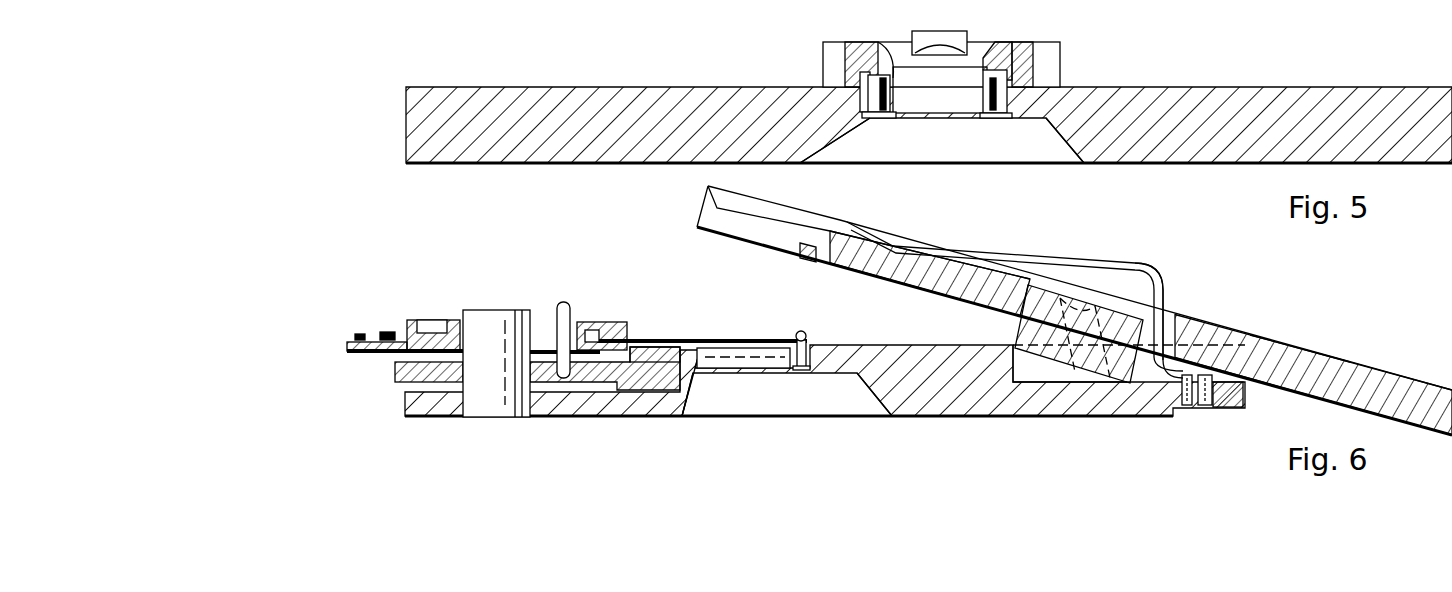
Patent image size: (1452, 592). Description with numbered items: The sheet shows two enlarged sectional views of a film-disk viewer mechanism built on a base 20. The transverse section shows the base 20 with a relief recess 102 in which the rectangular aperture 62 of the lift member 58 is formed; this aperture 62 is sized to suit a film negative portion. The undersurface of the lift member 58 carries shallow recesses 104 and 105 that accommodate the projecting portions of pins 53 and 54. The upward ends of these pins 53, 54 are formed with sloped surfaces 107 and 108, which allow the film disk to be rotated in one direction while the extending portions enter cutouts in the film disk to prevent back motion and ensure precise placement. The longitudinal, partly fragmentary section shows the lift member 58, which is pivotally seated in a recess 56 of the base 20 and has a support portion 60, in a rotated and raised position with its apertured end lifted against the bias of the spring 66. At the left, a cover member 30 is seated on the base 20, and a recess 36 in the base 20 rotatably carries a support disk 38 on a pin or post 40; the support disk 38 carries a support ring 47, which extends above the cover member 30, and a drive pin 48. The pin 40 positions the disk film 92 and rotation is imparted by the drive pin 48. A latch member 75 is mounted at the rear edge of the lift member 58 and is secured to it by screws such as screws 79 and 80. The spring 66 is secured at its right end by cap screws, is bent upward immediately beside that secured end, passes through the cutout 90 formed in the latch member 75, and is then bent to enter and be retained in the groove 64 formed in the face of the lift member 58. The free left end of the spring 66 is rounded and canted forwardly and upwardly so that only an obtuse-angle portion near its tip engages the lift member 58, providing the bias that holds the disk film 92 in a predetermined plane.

In FIG. 5, the base 20 is at (538, 90).
In FIG. 6, the base 20 is at (892, 346).
In FIG. 6, the cover member 30 is at (668, 338).
In FIG. 6, the recess 36 is at (690, 393).
In FIG. 6, the support disk 38 is at (637, 400).
In FIG. 6, the pin or post 40 is at (495, 320).
In FIG. 6, the support ring 47 is at (637, 347).
In FIG. 6, the drive pin 48 is at (565, 302).
In FIG. 5, the pin 53 is at (877, 120).
In FIG. 5, the pin 54 is at (1000, 120).
In FIG. 6, the pin 54 is at (806, 335).
In FIG. 6, the recess 56 is at (1037, 360).
In FIG. 5, the lift member 58 is at (1030, 42).
In FIG. 6, the lift member 58 is at (706, 197).
In FIG. 6, the support portion 60 is at (1022, 333).
In FIG. 5, the aperture 62 is at (942, 100).
In FIG. 6, the aperture 62 is at (738, 230).
In FIG. 6, the groove 64 is at (955, 258).
In FIG. 5, the spring 66 is at (940, 35).
In FIG. 6, the spring 66 is at (1063, 262).
In FIG. 6, the latch member 75 is at (1278, 348).
In FIG. 6, the screw 79 is at (1164, 274).
In FIG. 6, the screw 80 is at (1110, 266).
In FIG. 6, the cutout 90 is at (1185, 328).
In FIG. 6, the disk film 92 is at (700, 340).
In FIG. 5, the relief recess 102 is at (1062, 142).
In FIG. 6, the relief recess 102 is at (867, 388).
In FIG. 5, the shallow recess 104 is at (870, 78).
In FIG. 5, the shallow recess 105 is at (1055, 58).
In FIG. 5, the sloped surface 107 is at (878, 45).
In FIG. 5, the sloped surface 108 is at (1005, 72).
In FIG. 6, the sloped surface 108 is at (816, 262).